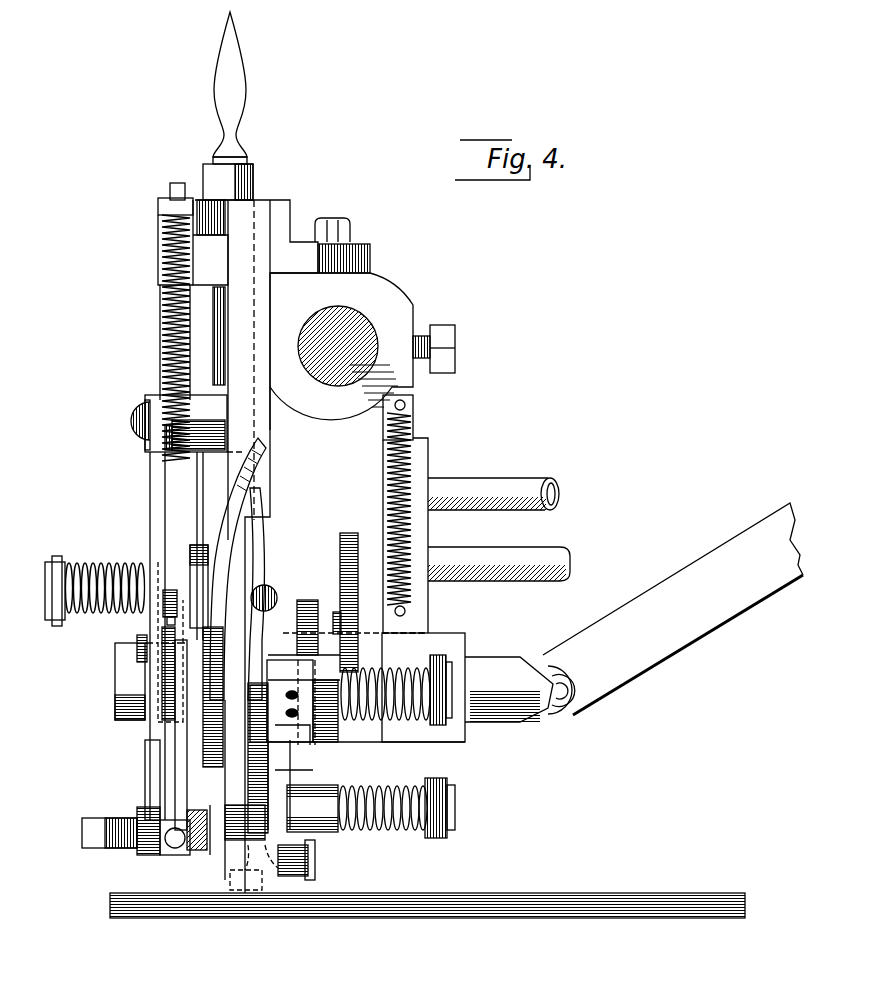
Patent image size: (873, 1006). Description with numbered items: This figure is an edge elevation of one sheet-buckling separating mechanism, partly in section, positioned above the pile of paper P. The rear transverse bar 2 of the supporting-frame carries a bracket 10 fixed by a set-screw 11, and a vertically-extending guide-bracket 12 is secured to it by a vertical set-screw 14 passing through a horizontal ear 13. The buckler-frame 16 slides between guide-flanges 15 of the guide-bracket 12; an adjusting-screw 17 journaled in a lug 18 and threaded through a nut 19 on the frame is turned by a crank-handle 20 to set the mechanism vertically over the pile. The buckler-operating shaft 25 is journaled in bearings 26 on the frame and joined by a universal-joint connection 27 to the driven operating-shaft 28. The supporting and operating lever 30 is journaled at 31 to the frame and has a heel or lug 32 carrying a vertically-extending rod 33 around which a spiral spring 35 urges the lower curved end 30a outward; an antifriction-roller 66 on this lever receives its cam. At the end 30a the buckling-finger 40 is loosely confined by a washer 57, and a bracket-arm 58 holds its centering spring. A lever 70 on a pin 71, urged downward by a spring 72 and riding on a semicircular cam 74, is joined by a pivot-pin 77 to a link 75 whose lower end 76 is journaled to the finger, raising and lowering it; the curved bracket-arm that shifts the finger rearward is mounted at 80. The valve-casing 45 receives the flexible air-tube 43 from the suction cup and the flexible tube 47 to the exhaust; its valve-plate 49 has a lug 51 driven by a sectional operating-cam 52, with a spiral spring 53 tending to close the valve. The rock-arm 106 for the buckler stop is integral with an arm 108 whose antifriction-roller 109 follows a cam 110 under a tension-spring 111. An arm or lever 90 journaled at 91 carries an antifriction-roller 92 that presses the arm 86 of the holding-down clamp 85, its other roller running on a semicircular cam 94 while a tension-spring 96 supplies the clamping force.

The crank-handle 20 is at (245, 96).
The lug 18 is at (200, 200).
The vertically-extending rod 33 is at (170, 186).
The spiral spring 35 is at (163, 264).
The nut 19 is at (210, 242).
The guide-bracket 12 is at (270, 215).
The vertical set-screw 14 is at (330, 220).
The horizontal ear 13 is at (365, 245).
The bracket 10 is at (372, 300).
The rear transverse bar 2 is at (320, 318).
The set-screw 11 is at (448, 334).
The adjusting-screw 17 is at (212, 350).
The journal of lever 31 is at (133, 426).
The guide-flanges 15 is at (240, 416).
The valve-plate 49 is at (383, 421).
The heel or lug 32 is at (162, 439).
The valve-casing 45 is at (420, 471).
The flexible tube 47 is at (500, 480).
The supporting and operating lever 30 is at (165, 505).
The buckler-frame 16 is at (235, 536).
The spiral spring 53 is at (385, 508).
The flexible air-tube 43 is at (482, 556).
The operating-shaft 28 is at (703, 566).
The spring 72 is at (97, 566).
The pin 71 is at (55, 613).
The lever 70 is at (200, 574).
The mounting of bracket-arm 80 is at (268, 591).
The lug or projection 51 is at (340, 560).
The sectional operating-cam 52 is at (338, 616).
The pivot-pin 77 is at (165, 621).
The bearings 26 is at (460, 643).
The cam 110 is at (297, 630).
The tension-spring 111 is at (395, 670).
The antifriction-roller 66 is at (165, 656).
The rock-arm 106 is at (276, 706).
The buckler-operating shaft 25 is at (495, 724).
The universal-joint connection 27 is at (555, 716).
The semicircular cam 74 is at (203, 746).
The arm 108 is at (338, 743).
The antifriction-roller 109 is at (313, 771).
The semicircular cam 94 is at (257, 767).
The lower curved end of lever 30a is at (150, 793).
The link 75 is at (186, 793).
The bracket-arm 58 is at (105, 826).
The lower end of link 76 is at (142, 849).
The buckling-finger 40 is at (178, 851).
The washer 57 is at (205, 851).
The arm or lever 90 is at (310, 833).
The journal 91 is at (398, 798).
The tension-spring 96 is at (400, 834).
The arm of holding-down clamp 86 is at (308, 879).
The antifriction-roller 92 is at (247, 838).
The holding-down clamp 85 is at (260, 886).
The pile of paper P is at (455, 906).